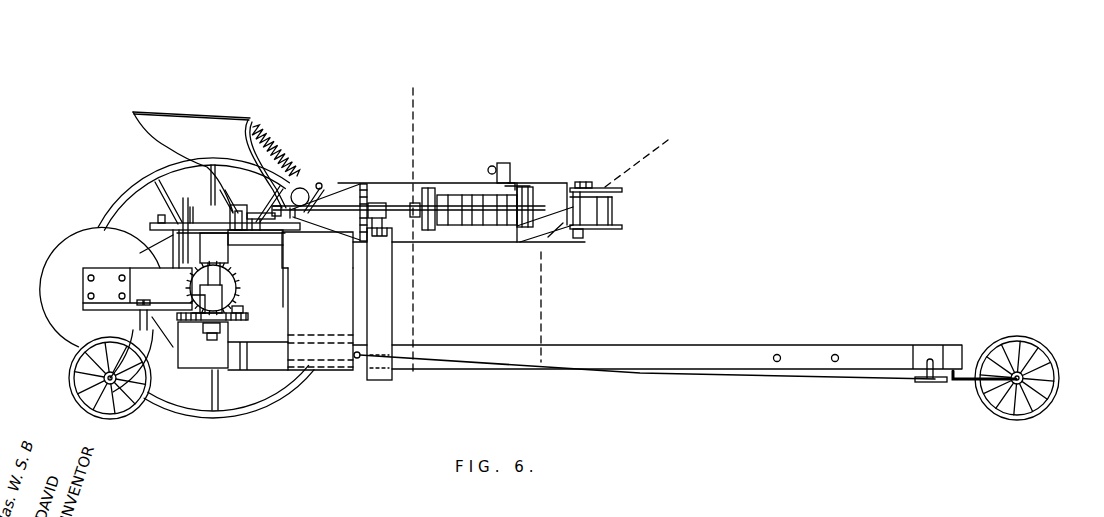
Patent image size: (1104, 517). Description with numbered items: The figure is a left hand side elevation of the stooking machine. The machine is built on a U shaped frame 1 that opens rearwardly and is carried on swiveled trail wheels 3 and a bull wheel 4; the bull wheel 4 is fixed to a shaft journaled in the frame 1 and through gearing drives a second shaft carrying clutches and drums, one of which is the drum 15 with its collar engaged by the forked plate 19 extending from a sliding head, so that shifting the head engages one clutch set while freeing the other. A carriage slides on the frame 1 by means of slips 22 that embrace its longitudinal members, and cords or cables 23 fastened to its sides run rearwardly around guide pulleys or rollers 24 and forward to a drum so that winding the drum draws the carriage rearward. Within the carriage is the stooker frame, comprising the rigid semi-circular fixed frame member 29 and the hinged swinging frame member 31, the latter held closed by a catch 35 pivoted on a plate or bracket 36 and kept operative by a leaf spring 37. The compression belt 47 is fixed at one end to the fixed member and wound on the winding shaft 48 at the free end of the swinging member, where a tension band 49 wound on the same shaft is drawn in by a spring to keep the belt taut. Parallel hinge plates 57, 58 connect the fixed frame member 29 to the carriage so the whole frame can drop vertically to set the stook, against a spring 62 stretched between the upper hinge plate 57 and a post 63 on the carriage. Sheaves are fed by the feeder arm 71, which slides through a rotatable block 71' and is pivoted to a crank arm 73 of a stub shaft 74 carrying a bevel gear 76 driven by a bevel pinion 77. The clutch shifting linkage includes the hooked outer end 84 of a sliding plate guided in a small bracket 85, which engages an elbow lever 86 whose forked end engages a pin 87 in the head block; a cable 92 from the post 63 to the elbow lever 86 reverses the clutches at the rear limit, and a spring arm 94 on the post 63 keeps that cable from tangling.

The U shaped frame 1 is at (732, 344).
The swiveled trail wheels 3 is at (85, 413).
The bull wheel 4 is at (262, 412).
The drum 15 is at (53, 327).
The forked plate 19 is at (133, 227).
The slips 22 is at (343, 372).
The cords or cables 23 is at (877, 380).
The guide pulleys or rollers 24 is at (928, 384).
The fixed frame member 29 is at (340, 183).
The swinging frame member 31 is at (513, 185).
The catch 35 is at (515, 178).
The plate or bracket 36 is at (490, 167).
The leaf spring 37 is at (507, 163).
The compression belt 47 is at (452, 198).
The winding rod, shaft, or drum 48 is at (592, 198).
The tension band 49 is at (587, 180).
The hinge plate 57 is at (317, 185).
The hinge plate 58 is at (320, 243).
The spring 62 is at (275, 147).
The post 63 is at (240, 145).
The feeder arm 71 is at (376, 174).
The rotatable block 71' is at (410, 182).
The crank arm 73 is at (262, 245).
The stub shaft 74 is at (212, 342).
The bevel gear 76 is at (240, 325).
The bevel pinion 77 is at (237, 302).
The hooked outer end 84 is at (233, 215).
The small bracket 85 is at (236, 203).
The elbow lever 86 is at (150, 224).
The pin 87 is at (157, 216).
The cord or cable 92 is at (143, 130).
The spring arm 94 is at (170, 114).